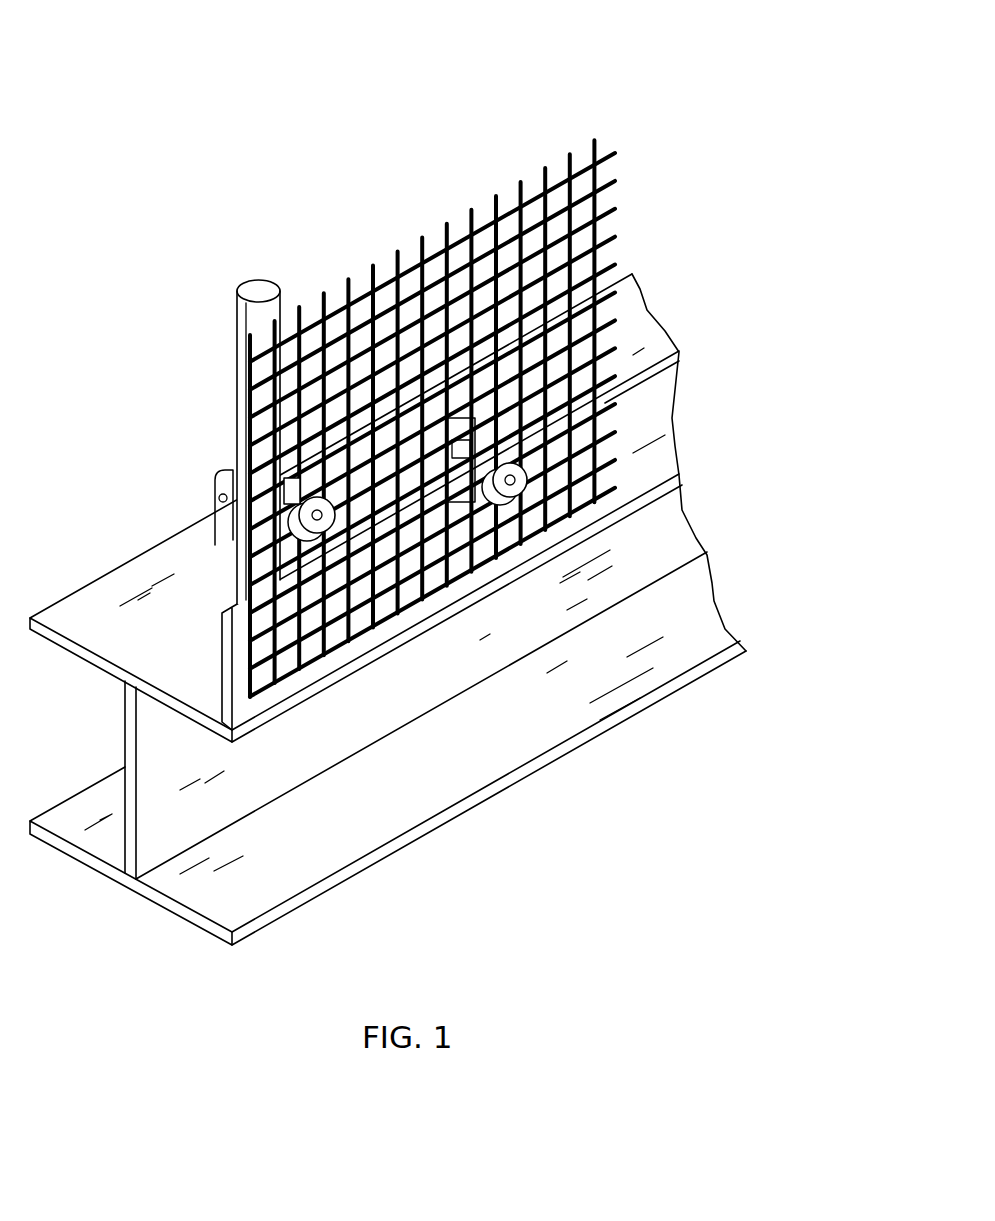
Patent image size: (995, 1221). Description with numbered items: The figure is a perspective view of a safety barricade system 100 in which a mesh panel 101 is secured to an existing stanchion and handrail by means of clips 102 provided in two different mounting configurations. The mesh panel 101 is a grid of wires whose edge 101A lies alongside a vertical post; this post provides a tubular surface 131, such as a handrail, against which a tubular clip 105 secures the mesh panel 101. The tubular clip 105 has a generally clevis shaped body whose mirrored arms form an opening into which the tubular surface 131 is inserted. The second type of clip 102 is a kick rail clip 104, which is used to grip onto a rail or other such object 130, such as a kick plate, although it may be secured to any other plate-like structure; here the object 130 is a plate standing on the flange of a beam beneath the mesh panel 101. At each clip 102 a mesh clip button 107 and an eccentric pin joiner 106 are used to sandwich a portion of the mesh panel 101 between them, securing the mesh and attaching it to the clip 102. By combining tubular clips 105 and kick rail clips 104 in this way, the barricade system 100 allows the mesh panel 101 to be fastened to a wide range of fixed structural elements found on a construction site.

The safety barricade system 100 is at (138, 90).
The mesh panel 101 is at (447, 240).
The edge of the mesh panel 101A is at (246, 577).
The clips 102 is at (425, 364).
The kick rail clip 104 is at (613, 267).
The tubular clip 105 is at (212, 456).
The eccentric pin joiner 106 is at (595, 418).
The mesh clip button 107 is at (372, 523).
The rail or other such object 130 is at (238, 710).
The tubular surface 131 is at (236, 285).